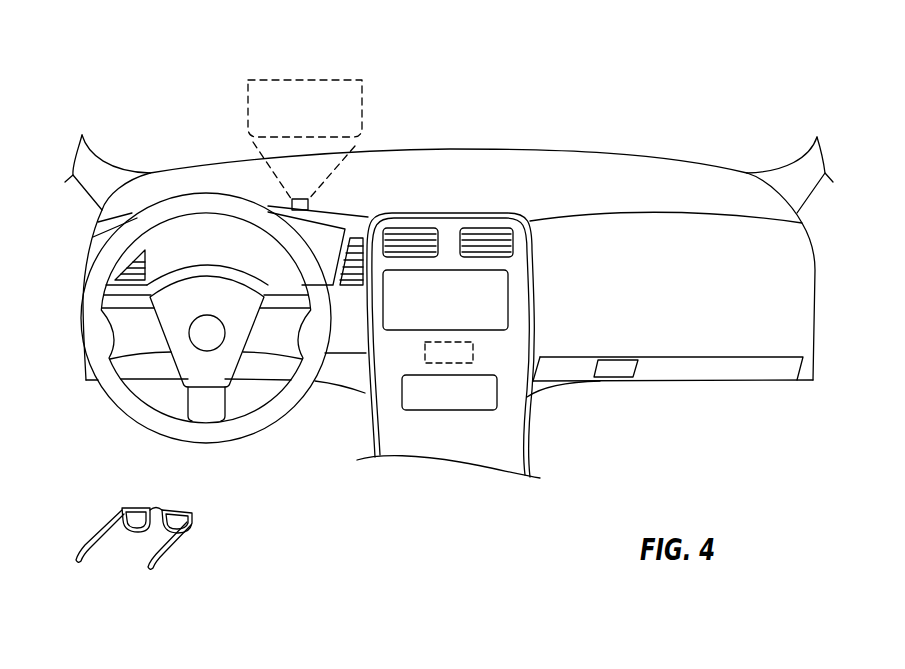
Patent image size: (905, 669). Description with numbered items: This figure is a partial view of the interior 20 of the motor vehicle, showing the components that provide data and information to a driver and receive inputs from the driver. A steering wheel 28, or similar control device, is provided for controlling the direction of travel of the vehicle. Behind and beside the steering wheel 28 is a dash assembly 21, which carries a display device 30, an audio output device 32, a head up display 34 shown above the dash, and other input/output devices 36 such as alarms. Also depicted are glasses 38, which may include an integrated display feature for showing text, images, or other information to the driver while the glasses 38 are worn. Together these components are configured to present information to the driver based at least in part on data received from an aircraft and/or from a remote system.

The interior 20 is at (557, 89).
The dash assembly 21 is at (505, 167).
The steering wheel 28 is at (266, 410).
The display device 30 is at (472, 318).
The audio output device 32 is at (442, 400).
The head up display 34 is at (313, 78).
The other input/output devices 36 is at (425, 353).
The glasses 38 is at (147, 501).